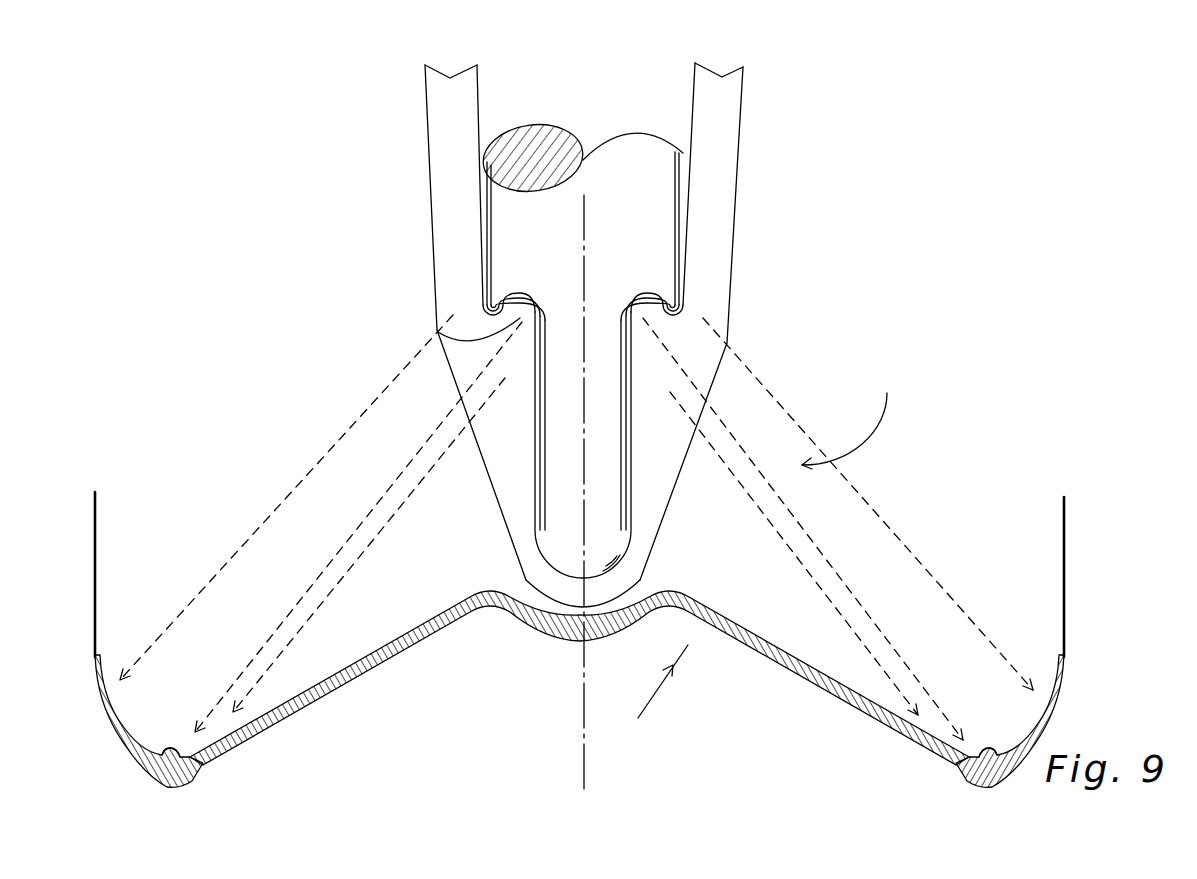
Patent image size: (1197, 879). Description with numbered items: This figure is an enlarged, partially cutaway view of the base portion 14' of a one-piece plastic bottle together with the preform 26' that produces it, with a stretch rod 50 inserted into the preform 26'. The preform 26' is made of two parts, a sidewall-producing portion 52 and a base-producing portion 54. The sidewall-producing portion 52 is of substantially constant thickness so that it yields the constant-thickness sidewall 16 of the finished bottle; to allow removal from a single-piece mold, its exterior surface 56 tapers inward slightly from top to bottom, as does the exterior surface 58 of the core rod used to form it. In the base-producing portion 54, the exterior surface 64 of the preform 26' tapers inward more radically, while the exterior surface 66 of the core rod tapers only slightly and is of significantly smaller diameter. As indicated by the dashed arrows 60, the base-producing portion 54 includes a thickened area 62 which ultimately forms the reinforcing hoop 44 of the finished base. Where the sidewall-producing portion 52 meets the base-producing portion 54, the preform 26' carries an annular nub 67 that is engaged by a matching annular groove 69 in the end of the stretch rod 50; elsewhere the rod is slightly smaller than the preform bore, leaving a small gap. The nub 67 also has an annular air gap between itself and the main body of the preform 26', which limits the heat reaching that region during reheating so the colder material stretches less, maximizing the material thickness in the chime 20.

The stretch rod 50 is at (622, 167).
The preform 26' is at (405, 197).
The sidewall-producing portion 52 is at (757, 167).
The exterior surface of the preform in the sidewall-producing portion 56 is at (733, 252).
The exterior surface of the core rod 58 is at (683, 263).
The annular nub 67 is at (513, 307).
The annular groove 69 is at (440, 337).
The exterior surface of the preform in the base-producing portion 64 is at (687, 453).
The exterior surface of the core rod in the base-producing area 66 is at (625, 515).
The base-producing portion 54 is at (851, 420).
The dashed arrows 60 is at (396, 516).
The sidewall 16 is at (98, 550).
The thickened area 62 is at (365, 655).
The reinforcing hoop 44 is at (177, 748).
The chime 20 is at (190, 783).
The container 14' is at (652, 699).